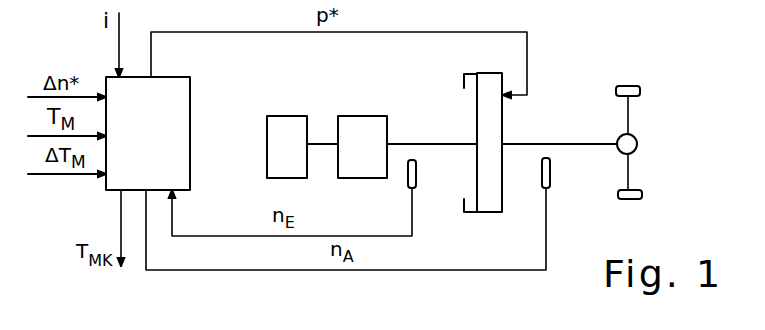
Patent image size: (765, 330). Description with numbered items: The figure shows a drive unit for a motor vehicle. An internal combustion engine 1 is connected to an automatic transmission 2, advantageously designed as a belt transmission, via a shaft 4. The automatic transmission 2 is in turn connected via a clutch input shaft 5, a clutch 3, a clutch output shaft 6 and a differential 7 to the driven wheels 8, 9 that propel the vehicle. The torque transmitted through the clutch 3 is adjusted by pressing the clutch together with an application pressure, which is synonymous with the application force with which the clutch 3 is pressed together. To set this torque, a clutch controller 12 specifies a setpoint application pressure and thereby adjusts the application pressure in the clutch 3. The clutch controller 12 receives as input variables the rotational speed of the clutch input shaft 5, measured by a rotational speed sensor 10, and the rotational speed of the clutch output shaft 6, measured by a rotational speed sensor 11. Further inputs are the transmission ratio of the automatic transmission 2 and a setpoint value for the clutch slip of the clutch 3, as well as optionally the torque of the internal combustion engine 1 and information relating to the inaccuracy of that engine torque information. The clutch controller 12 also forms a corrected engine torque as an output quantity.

The internal combustion engine 1 is at (278, 157).
The automatic transmission 2 is at (366, 126).
The clutch 3 is at (490, 214).
The shaft 4 is at (325, 140).
The clutch input shaft 5 is at (441, 142).
The clutch output shaft 6 is at (567, 143).
The differential 7 is at (630, 146).
The driven wheel 8 is at (638, 91).
The driven wheel 9 is at (640, 194).
The rotational speed sensor 10 is at (414, 168).
The rotational speed sensor 11 is at (550, 166).
The clutch controller 12 is at (176, 128).